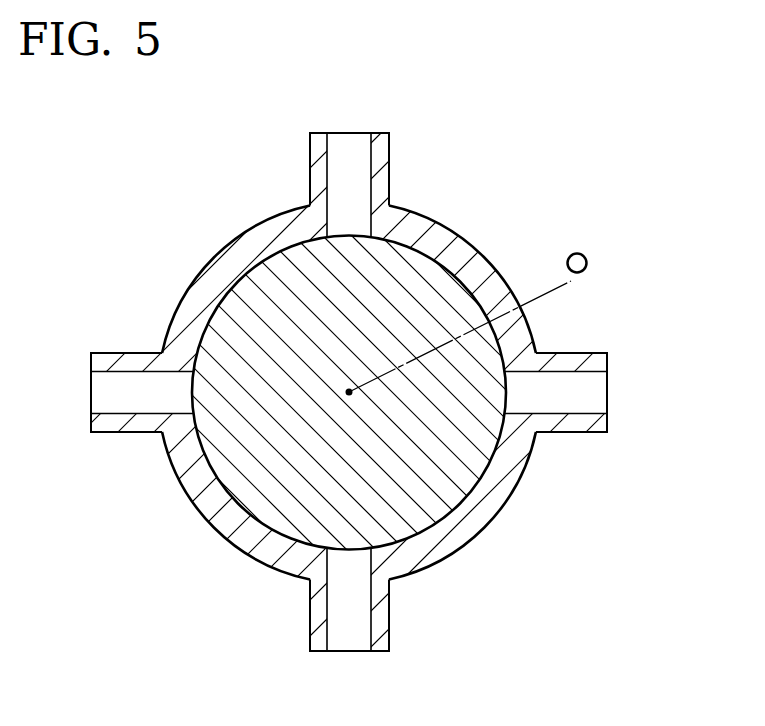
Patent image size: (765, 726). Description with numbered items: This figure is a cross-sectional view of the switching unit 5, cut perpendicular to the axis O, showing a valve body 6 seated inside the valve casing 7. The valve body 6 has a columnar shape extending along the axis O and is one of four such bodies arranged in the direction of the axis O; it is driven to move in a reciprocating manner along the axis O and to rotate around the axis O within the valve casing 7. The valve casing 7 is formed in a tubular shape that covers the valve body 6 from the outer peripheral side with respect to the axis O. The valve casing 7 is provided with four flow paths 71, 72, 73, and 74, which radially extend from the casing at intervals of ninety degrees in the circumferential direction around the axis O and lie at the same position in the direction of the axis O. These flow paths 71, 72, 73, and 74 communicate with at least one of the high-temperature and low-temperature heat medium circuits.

The switching unit 5 is at (124, 163).
The valve body 6 is at (425, 287).
The valve casing 7 is at (475, 528).
The flow path 71 is at (332, 155).
The flow path 72 is at (332, 625).
The flow path 73 is at (588, 410).
The flow path 74 is at (108, 411).